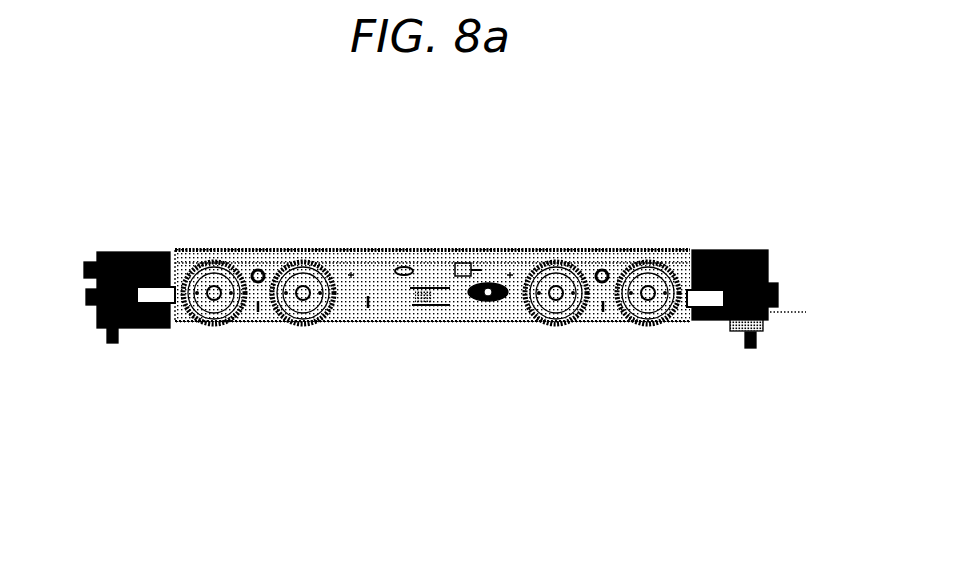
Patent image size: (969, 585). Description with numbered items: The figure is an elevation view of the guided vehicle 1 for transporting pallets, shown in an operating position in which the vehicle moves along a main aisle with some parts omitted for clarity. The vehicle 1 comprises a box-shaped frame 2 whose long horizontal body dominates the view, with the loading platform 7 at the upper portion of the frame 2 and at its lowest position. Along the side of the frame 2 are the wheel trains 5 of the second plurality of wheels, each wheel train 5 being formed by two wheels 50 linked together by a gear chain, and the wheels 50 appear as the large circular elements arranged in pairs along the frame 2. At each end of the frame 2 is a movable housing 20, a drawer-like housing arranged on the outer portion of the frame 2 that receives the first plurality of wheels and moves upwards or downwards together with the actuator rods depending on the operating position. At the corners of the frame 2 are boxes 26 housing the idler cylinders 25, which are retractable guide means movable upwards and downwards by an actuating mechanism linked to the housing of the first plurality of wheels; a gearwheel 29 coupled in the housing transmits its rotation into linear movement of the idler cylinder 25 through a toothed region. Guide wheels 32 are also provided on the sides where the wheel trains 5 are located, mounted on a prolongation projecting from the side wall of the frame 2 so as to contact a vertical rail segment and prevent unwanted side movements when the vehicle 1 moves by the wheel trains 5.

The guided vehicle 1 is at (606, 170).
The box-shaped frame 2 is at (454, 268).
The wheel train 5 is at (264, 342).
The loading platform 7 is at (378, 251).
The movable housing 20 is at (145, 252).
The idler cylinder 25 is at (112, 343).
The box 26 is at (105, 256).
The gearwheel 29 is at (139, 292).
The guide wheel 32 is at (432, 296).
The wheel 50 is at (650, 300).